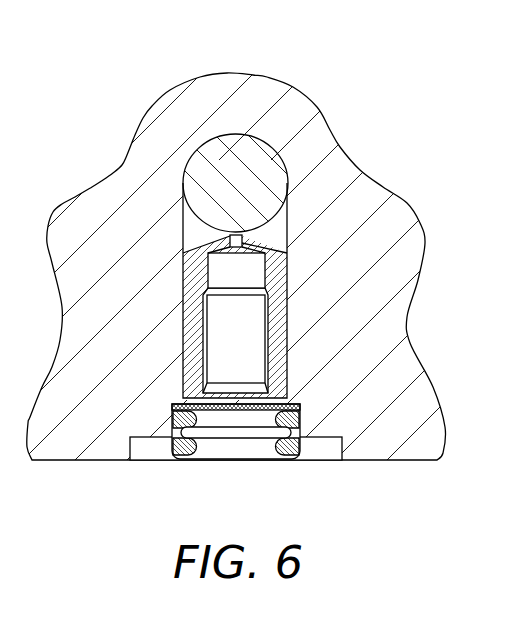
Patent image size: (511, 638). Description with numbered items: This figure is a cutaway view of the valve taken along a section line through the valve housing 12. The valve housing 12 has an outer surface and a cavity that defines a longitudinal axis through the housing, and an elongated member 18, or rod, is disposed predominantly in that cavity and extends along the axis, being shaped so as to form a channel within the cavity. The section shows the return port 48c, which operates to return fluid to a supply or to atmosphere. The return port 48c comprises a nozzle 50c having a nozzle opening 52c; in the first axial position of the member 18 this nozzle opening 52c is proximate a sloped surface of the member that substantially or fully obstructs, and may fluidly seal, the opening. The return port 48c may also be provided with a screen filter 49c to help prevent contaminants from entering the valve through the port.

The valve housing 12 is at (117, 178).
The elongated member 18 is at (237, 157).
The return port 48c is at (212, 440).
The screen filter 49c is at (253, 410).
The return port nozzle 50c is at (190, 291).
The return port nozzle opening 52c is at (242, 235).